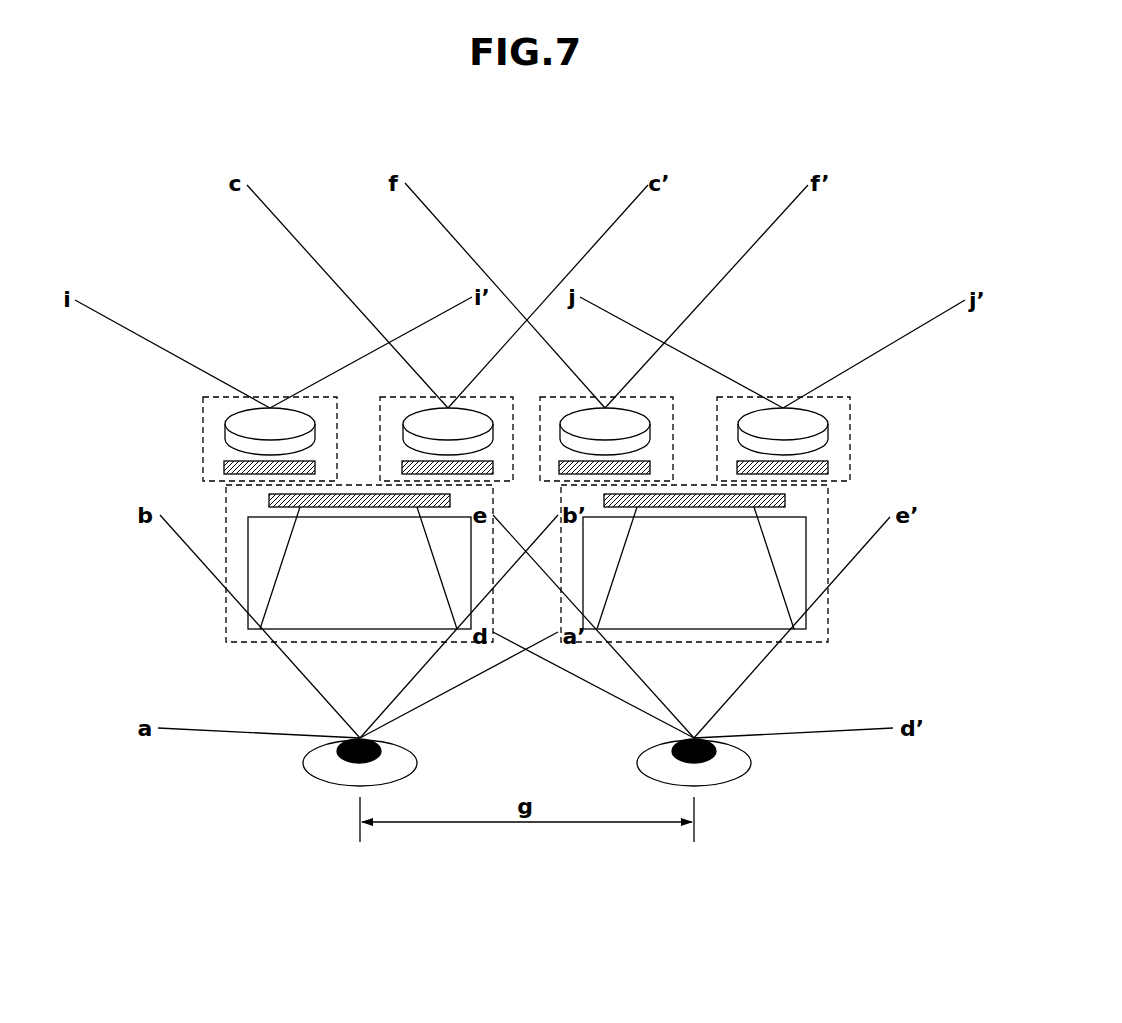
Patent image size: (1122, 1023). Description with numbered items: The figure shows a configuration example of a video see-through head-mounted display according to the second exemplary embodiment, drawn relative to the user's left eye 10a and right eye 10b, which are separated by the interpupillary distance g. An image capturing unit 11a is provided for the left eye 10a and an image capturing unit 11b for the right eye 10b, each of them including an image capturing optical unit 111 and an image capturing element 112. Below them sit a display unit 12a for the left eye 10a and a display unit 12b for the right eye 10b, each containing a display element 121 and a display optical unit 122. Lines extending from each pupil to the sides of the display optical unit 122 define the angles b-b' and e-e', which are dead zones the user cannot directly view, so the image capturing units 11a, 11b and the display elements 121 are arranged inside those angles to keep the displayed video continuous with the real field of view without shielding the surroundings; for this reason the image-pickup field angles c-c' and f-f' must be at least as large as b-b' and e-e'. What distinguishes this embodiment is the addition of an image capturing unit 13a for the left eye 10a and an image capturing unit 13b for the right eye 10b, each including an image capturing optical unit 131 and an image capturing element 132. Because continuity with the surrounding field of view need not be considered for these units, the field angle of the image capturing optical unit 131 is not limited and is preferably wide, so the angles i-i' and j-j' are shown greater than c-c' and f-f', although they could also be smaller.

The eye 10a is at (318, 778).
The eye 10b is at (733, 780).
The image capturing unit 11a is at (436, 414).
The image capturing unit 11b is at (605, 397).
The image capturing optical unit 111 is at (493, 430).
The image capturing element 112 is at (402, 467).
The display unit 12a is at (316, 590).
The display unit 12b is at (830, 642).
The display element 121 is at (269, 500).
The display optical unit 122 is at (248, 555).
The image capturing unit 13a is at (238, 414).
The image capturing unit 13b is at (851, 432).
The image capturing optical unit 131 is at (225, 432).
The image capturing element 132 is at (224, 467).